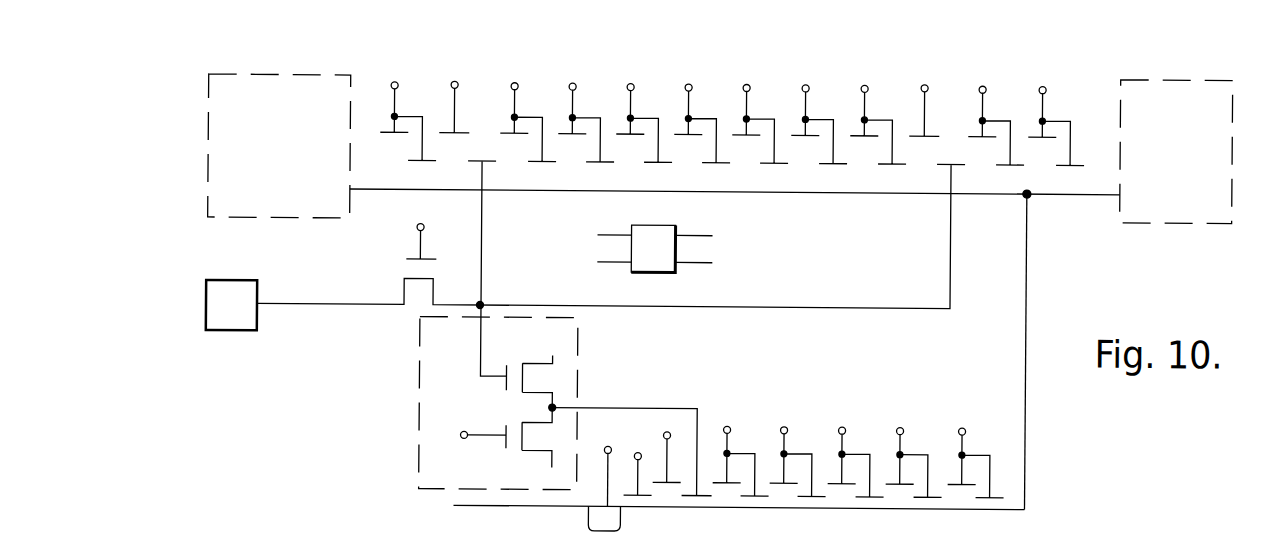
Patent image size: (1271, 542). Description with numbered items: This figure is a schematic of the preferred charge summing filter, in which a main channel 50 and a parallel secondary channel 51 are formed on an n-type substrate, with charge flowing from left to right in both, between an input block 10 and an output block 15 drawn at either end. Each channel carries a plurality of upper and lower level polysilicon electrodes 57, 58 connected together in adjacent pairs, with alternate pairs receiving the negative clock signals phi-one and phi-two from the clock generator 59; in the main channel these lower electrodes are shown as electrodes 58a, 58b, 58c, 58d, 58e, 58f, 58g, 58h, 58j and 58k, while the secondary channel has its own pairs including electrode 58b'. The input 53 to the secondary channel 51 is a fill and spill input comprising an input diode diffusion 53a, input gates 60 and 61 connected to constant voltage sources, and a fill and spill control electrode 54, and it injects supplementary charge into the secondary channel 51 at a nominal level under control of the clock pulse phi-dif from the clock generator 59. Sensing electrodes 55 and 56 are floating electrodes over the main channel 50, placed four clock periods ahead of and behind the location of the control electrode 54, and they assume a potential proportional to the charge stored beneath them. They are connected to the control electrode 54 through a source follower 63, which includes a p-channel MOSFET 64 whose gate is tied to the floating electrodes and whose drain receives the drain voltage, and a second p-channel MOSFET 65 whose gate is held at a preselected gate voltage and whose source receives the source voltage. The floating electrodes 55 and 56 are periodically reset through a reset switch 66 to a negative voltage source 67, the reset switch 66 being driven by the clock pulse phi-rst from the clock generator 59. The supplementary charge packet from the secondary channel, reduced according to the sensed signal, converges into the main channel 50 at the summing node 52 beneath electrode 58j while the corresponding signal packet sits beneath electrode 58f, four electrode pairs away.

The input section 10 is at (207, 76).
The output section 15 is at (1231, 75).
The main channel 50 is at (735, 121).
The secondary channel 51 is at (856, 446).
The summing node 52 is at (1026, 246).
The input 53 is at (739, 442).
The input diode diffusion 53a is at (588, 520).
The fill and spill control electrode 54 is at (702, 496).
The sensing electrode 55 is at (481, 152).
The sensing electrode 56 is at (950, 158).
The upper level polysilicon electrode 57 is at (507, 134).
The lower level polysilicon electrode 58 is at (942, 496).
The main channel electrode 58a is at (412, 164).
The main channel electrode 58b is at (551, 151).
The secondary channel electrode 58b' is at (745, 471).
The main channel electrode 58c is at (604, 163).
The main channel electrode 58d is at (662, 163).
The main channel electrode 58e is at (720, 163).
The main channel electrode 58f is at (778, 163).
The main channel electrode 58g is at (837, 163).
The main channel electrode 58h is at (896, 163).
The main channel electrode 58j is at (1014, 163).
The main channel electrode 58k is at (1074, 163).
The clock generator 59 is at (676, 272).
The input gate 60 is at (628, 497).
The input gate 61 is at (660, 483).
The source follower 63 is at (518, 404).
The p-channel MOSFET 64 is at (522, 395).
The p-channel MOSFET 65 is at (522, 450).
The reset switch 66 is at (406, 261).
The negative voltage source 67 is at (258, 282).